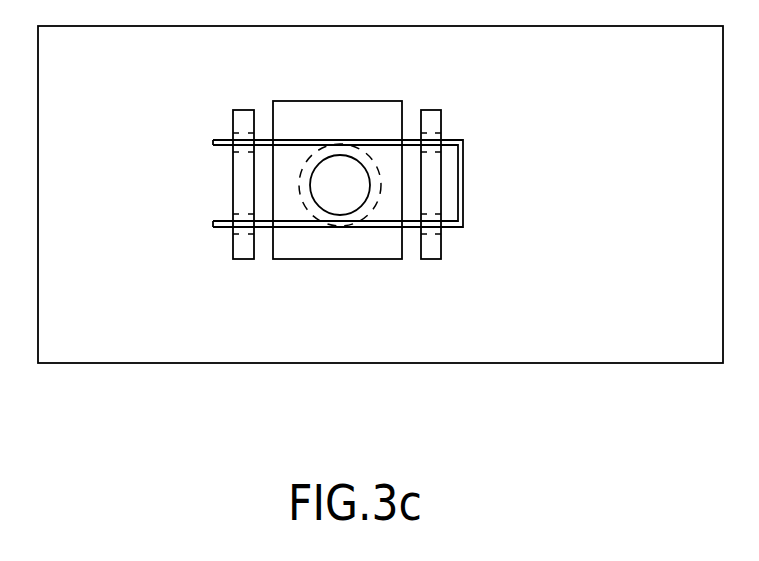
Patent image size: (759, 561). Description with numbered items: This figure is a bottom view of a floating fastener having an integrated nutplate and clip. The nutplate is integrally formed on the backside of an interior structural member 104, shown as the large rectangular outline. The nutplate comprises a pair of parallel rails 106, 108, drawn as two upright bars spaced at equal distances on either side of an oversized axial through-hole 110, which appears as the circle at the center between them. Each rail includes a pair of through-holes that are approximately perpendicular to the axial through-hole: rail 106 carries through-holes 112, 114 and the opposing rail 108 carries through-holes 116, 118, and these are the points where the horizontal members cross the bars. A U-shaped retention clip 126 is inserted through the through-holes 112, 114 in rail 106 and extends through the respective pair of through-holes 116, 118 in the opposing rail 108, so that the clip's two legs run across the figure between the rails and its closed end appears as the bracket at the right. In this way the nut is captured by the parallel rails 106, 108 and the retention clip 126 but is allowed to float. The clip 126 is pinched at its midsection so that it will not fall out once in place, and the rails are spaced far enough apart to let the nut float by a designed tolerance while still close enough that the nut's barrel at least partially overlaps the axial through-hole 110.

The interior structural member 104 is at (684, 240).
The rail 106 is at (440, 110).
The rail 108 is at (243, 110).
The oversized axial through-hole 110 is at (369, 211).
The through-hole 112 is at (440, 138).
The through-hole 114 is at (440, 228).
The through-hole 116 is at (237, 136).
The through-hole 118 is at (236, 230).
The U-shaped retention clip 126 is at (463, 179).